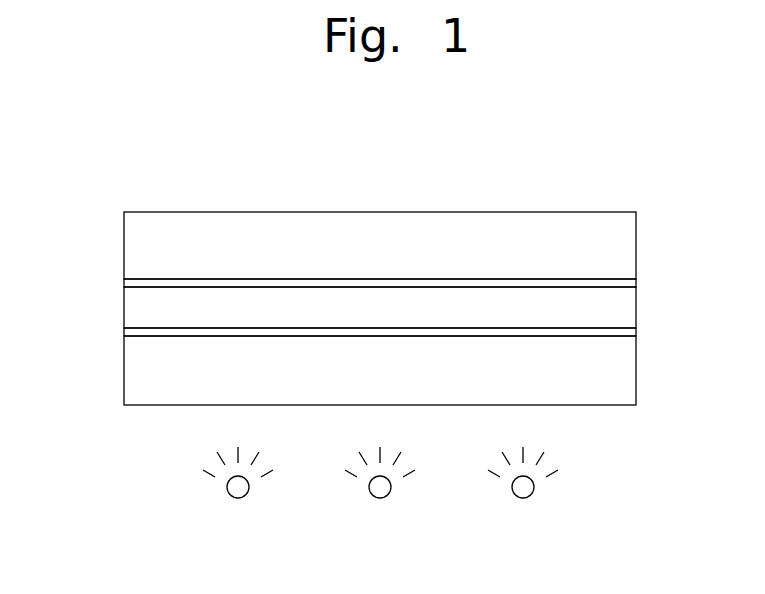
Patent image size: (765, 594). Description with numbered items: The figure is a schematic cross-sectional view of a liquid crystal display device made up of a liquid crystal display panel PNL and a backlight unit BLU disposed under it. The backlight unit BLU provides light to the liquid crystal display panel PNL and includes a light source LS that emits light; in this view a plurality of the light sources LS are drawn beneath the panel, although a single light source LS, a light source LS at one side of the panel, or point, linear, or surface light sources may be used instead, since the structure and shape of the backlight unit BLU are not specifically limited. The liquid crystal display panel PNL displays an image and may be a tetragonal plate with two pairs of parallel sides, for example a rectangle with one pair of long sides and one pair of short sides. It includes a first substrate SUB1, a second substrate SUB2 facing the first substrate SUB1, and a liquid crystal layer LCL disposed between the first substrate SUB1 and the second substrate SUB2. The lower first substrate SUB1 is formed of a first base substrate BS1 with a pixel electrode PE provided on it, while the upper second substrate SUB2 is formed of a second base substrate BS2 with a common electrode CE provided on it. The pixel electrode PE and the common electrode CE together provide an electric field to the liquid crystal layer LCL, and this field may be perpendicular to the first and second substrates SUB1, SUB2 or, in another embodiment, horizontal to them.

The liquid crystal display panel PNL is at (577, 188).
The second substrate SUB2 is at (113, 212).
The first substrate SUB1 is at (113, 328).
The second base substrate BS2 is at (623, 250).
The common electrode CE is at (630, 284).
The liquid crystal layer LCL is at (623, 311).
The pixel electrode PE is at (630, 333).
The first base substrate BS1 is at (623, 371).
The backlight unit BLU is at (591, 478).
The light source LS is at (236, 497).